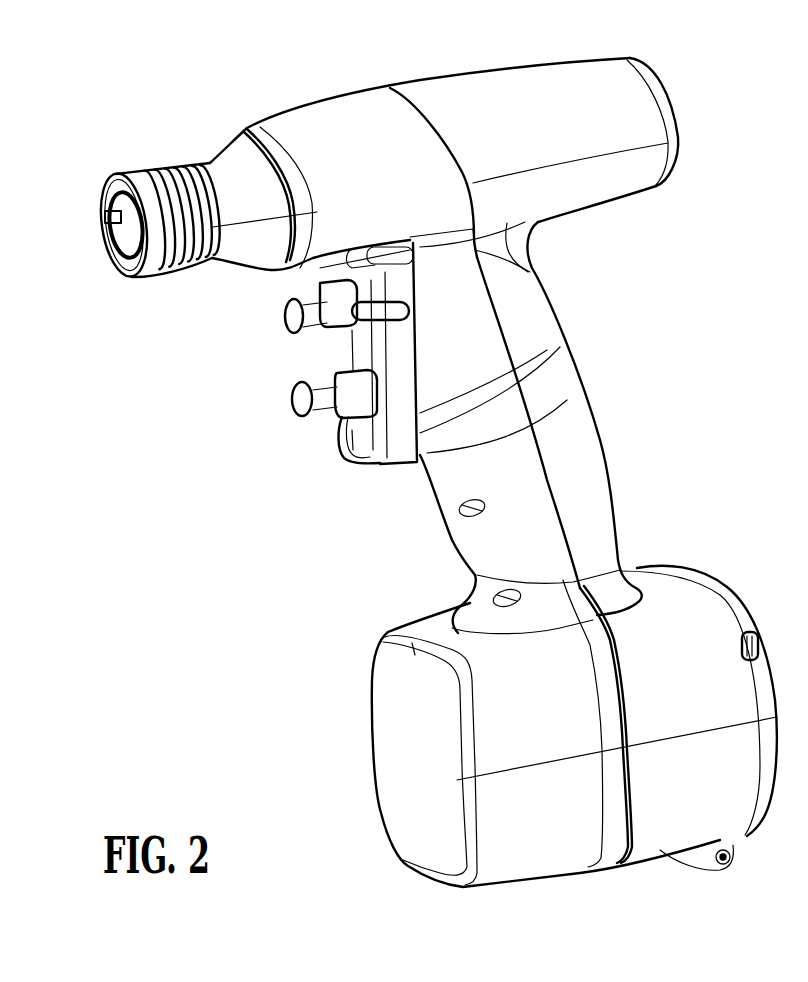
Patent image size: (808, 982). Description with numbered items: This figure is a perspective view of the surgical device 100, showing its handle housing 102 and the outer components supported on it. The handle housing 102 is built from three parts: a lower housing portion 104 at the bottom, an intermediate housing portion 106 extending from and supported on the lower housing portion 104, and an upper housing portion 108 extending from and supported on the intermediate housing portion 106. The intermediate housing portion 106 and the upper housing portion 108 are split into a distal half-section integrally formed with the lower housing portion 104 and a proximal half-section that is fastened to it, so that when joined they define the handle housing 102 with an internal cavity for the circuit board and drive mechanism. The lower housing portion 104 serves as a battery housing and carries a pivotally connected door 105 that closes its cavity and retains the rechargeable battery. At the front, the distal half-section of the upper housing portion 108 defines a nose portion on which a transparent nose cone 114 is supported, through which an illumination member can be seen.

The surgical device 100 is at (157, 90).
The handle housing 102 is at (680, 73).
The lower housing portion 104 is at (371, 716).
The door 105 is at (731, 568).
The intermediate housing portion 106 is at (604, 389).
The upper housing portion 108 is at (692, 161).
The nose cone 114 is at (207, 151).